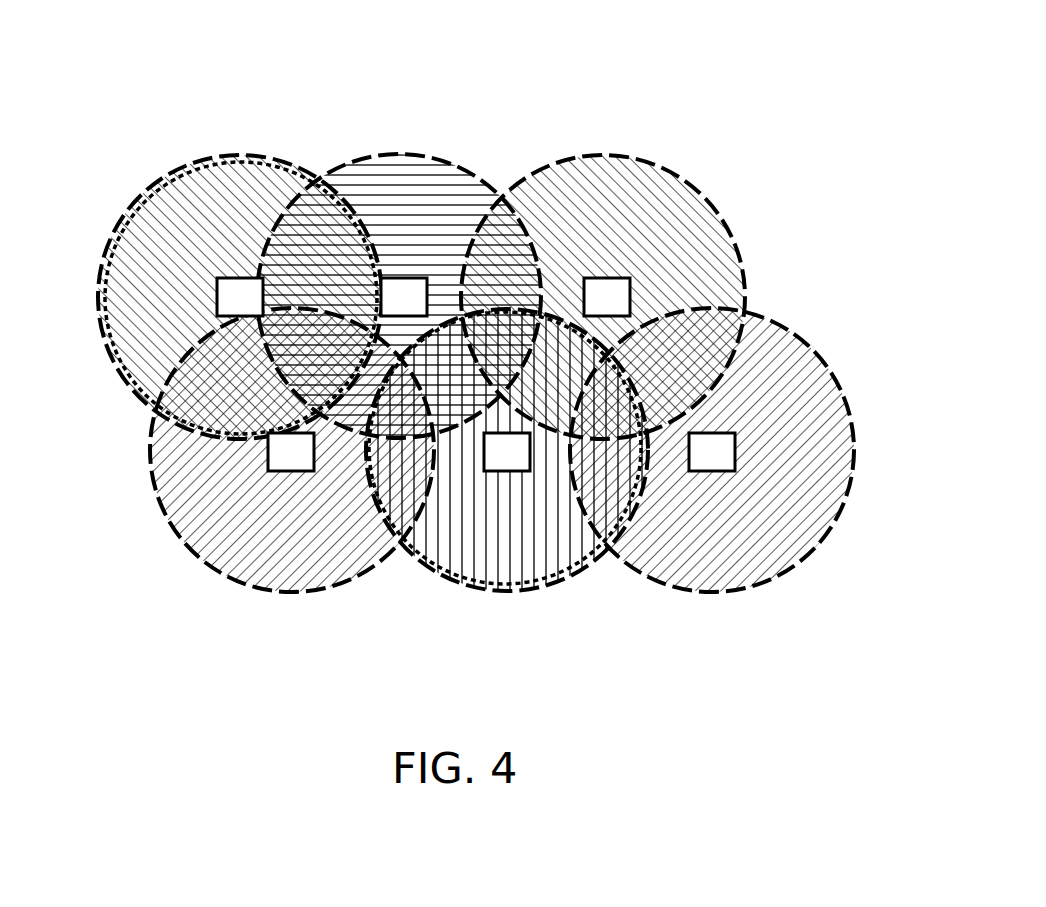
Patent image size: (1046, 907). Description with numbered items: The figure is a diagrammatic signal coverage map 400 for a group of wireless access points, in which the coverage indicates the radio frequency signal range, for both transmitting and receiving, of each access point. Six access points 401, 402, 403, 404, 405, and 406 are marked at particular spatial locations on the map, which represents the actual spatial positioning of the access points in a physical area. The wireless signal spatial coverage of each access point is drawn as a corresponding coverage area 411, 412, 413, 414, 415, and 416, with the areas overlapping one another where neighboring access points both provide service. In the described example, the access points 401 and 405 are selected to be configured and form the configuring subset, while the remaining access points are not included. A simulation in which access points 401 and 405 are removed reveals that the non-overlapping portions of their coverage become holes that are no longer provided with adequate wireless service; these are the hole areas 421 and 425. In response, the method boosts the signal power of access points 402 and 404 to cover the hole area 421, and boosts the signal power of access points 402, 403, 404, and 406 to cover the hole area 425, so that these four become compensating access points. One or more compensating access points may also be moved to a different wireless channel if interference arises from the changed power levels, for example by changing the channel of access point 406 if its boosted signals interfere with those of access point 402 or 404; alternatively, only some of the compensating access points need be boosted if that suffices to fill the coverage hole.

The signal coverage map 400 is at (686, 82).
The access point 401 is at (240, 297).
The access point 402 is at (404, 297).
The access point 403 is at (607, 297).
The access point 404 is at (291, 452).
The access point 405 is at (507, 452).
The access point 406 is at (712, 452).
The coverage area 411 is at (209, 157).
The coverage area 412 is at (428, 158).
The coverage area 413 is at (626, 158).
The coverage area 414 is at (292, 594).
The coverage area 415 is at (470, 590).
The coverage area 416 is at (738, 594).
The hole area 421 is at (118, 290).
The hole area 425 is at (556, 568).